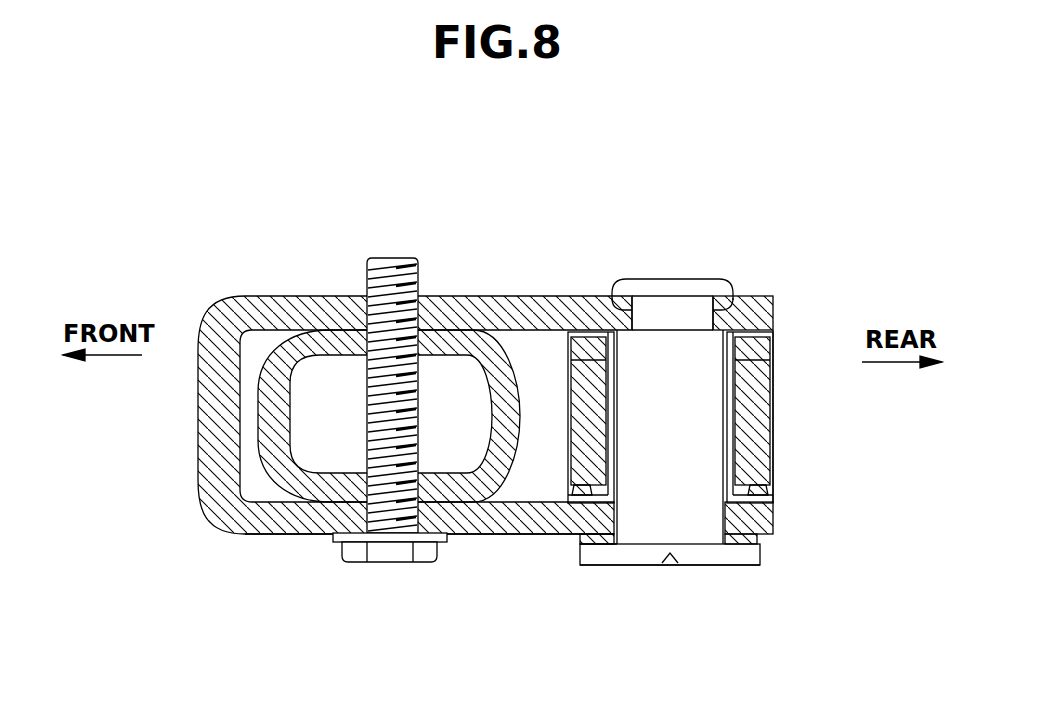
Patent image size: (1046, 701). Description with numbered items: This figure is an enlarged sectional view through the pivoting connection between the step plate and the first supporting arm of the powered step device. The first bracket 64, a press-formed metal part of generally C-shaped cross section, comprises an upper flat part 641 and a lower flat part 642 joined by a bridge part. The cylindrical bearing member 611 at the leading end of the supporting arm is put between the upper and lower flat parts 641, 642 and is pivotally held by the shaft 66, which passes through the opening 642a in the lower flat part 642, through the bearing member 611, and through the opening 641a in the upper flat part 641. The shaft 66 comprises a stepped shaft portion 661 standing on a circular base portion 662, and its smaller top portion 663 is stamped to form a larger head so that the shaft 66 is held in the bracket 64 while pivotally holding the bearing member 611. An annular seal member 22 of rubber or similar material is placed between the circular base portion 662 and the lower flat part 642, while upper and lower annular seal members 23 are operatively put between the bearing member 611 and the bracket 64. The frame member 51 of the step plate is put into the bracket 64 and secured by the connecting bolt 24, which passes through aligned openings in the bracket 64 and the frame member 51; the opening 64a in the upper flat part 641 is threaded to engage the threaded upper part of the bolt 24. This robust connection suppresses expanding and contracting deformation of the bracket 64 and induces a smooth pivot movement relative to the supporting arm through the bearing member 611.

The first bracket 64 is at (485, 362).
The upper flat part 641 is at (482, 297).
The opening 64a is at (380, 268).
The opening 641a is at (652, 298).
The stepped shaft portion 661 is at (602, 332).
The smaller top portion 663 is at (737, 335).
The frame member 51 is at (257, 450).
The cylindrical bearing member 611 is at (775, 453).
The connecting bolt 24 is at (390, 563).
The lower flat part 642 is at (483, 535).
The annular seal member 23 is at (565, 495).
The annular seal member 22 is at (583, 545).
The circular base portion 662 is at (640, 565).
The opening 642a is at (723, 523).
The shaft 66 is at (760, 560).